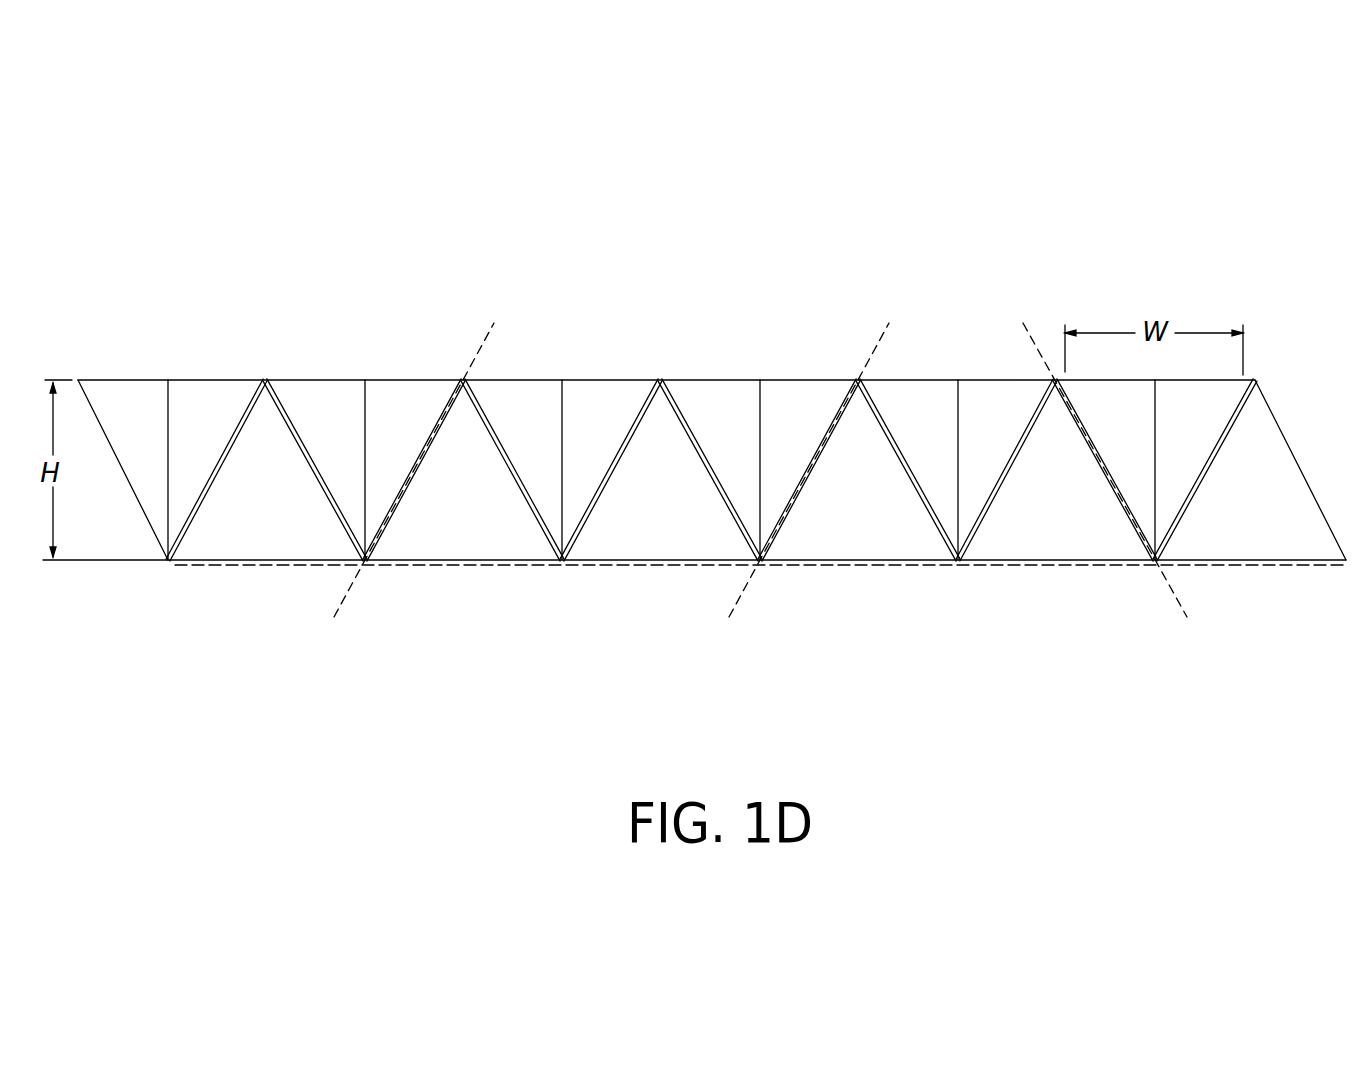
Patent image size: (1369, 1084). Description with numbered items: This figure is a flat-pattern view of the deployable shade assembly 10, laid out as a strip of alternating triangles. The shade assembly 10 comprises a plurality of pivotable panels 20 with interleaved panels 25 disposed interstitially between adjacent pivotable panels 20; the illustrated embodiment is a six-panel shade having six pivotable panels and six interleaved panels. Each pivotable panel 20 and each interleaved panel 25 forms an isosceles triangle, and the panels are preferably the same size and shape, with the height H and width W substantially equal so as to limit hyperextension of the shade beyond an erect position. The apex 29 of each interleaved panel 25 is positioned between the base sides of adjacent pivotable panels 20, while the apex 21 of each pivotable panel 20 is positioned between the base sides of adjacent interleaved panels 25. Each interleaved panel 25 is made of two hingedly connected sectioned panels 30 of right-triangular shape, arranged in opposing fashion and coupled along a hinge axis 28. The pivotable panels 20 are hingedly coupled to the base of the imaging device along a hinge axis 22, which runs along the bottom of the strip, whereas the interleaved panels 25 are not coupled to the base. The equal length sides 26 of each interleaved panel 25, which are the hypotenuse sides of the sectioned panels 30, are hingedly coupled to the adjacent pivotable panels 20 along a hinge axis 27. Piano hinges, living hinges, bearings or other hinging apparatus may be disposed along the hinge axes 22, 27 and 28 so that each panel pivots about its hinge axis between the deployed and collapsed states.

The shade assembly 10 is at (672, 182).
The pivotable panel 20 is at (285, 533).
The apex 21 is at (266, 380).
The hinge axis 22 is at (228, 568).
The interleaved panel 25 is at (221, 388).
The equal length side 26 is at (130, 487).
The hinge axis 27 is at (478, 332).
The hinge axis 28 is at (563, 403).
The apex 29 is at (563, 533).
The sectioned panel 30 is at (190, 388).